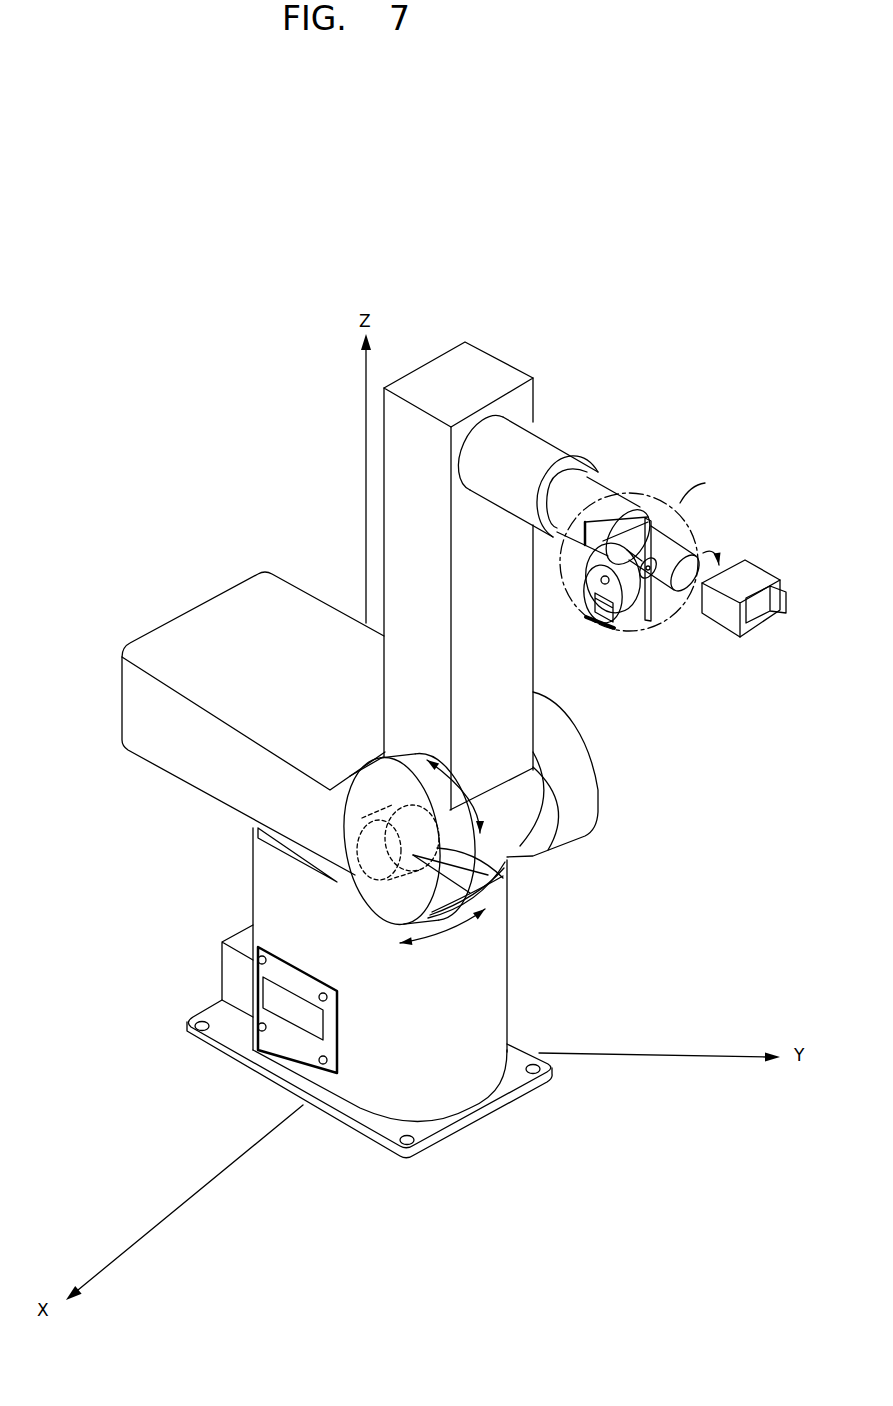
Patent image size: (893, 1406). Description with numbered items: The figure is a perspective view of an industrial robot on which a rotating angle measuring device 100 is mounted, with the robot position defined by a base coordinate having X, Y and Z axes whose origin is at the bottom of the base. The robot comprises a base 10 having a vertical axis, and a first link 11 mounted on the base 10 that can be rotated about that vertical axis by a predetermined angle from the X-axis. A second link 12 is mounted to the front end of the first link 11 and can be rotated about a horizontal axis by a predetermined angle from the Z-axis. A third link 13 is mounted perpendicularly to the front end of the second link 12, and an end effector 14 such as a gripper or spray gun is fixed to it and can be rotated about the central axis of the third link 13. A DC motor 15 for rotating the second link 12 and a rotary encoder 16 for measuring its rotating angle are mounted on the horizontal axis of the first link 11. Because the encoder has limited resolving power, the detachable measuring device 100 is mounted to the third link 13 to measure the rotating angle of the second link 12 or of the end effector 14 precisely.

The base 10 is at (272, 897).
The first link 11 is at (228, 613).
The second link 12 is at (397, 427).
The third link 13 is at (596, 488).
The end effector 14 is at (750, 581).
The DC motor 15 is at (508, 878).
The rotary encoder 16 is at (508, 913).
The rotating angle measuring device 100 is at (636, 630).